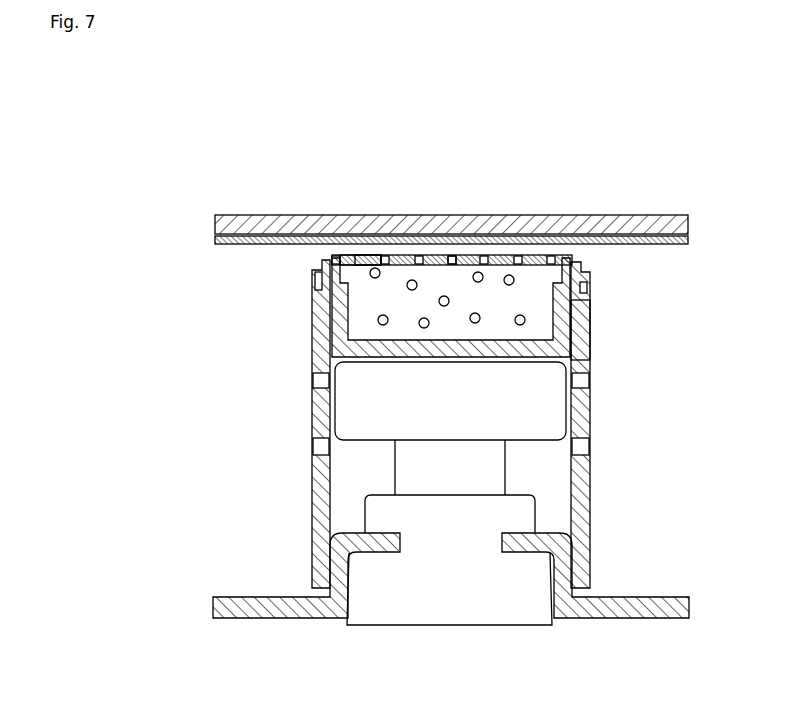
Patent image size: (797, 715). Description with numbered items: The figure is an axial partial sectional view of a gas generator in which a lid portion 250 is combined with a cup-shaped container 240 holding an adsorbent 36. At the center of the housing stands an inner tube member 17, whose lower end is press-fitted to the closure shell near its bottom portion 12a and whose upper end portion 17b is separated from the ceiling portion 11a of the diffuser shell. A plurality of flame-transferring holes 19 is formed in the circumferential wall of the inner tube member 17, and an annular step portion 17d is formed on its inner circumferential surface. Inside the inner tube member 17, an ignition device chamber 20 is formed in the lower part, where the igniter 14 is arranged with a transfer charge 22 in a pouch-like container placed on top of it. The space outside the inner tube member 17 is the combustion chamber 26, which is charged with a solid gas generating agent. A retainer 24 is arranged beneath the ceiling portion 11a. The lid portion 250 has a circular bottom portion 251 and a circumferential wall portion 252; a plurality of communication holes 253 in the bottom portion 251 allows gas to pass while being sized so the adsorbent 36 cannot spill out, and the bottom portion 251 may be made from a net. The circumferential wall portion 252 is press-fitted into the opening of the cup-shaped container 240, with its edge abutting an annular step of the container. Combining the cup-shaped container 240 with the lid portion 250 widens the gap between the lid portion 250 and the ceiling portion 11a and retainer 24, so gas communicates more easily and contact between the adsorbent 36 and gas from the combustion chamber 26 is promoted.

The ceiling portion 11a is at (566, 227).
The retainer 24 is at (258, 245).
The lid portion 250 is at (305, 165).
The bottom portion 251 is at (366, 256).
The circumferential wall portion 252 is at (334, 256).
The communication holes 253 is at (451, 256).
The cup-shaped container 240 is at (561, 346).
The adsorbent 36 is at (508, 274).
The flame-transferring holes 19 is at (313, 447).
The upper end portion 17b is at (318, 284).
The combustion chamber 26 is at (630, 450).
The inner tube member 17 is at (583, 323).
The annular step portion 17d is at (583, 289).
The transfer charge 22 is at (435, 417).
The ignition device chamber 20 is at (523, 487).
The bottom portion 12a is at (627, 614).
The igniter 14 is at (395, 603).